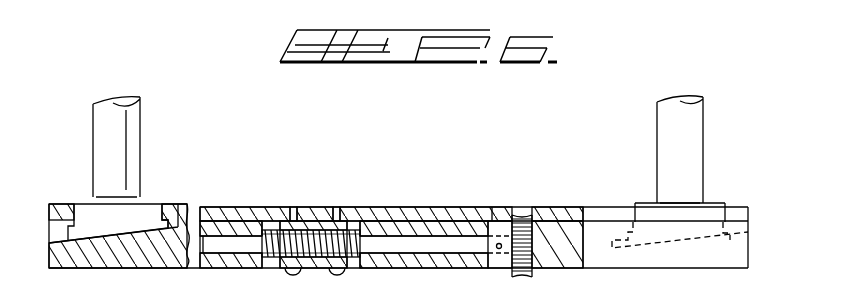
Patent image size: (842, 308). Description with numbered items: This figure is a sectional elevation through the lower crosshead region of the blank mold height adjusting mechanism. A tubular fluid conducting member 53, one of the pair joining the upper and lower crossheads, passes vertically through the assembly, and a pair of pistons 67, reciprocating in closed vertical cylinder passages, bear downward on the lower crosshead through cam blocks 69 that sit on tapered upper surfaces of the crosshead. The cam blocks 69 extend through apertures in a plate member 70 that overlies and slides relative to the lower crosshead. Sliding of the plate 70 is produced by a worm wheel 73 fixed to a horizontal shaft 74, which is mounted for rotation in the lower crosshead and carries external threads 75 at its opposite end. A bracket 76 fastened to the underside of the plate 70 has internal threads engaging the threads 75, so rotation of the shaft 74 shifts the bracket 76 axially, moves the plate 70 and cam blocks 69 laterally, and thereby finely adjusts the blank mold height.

The tubular fluid conducting member 53 is at (558, 253).
The piston 67 is at (110, 122).
The cam block 69 is at (97, 213).
The apertured plate member 70 is at (228, 212).
The worm wheel 73 is at (552, 173).
The horizontal shaft 74 is at (432, 240).
The external threads 75 is at (315, 232).
The bracket 76 is at (312, 268).